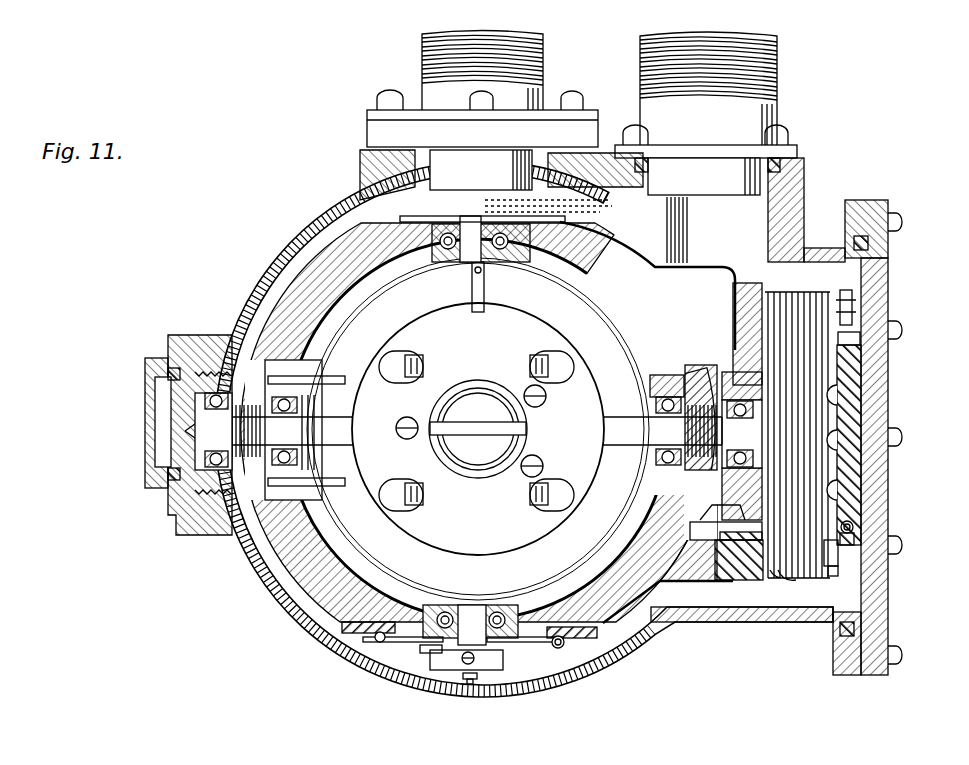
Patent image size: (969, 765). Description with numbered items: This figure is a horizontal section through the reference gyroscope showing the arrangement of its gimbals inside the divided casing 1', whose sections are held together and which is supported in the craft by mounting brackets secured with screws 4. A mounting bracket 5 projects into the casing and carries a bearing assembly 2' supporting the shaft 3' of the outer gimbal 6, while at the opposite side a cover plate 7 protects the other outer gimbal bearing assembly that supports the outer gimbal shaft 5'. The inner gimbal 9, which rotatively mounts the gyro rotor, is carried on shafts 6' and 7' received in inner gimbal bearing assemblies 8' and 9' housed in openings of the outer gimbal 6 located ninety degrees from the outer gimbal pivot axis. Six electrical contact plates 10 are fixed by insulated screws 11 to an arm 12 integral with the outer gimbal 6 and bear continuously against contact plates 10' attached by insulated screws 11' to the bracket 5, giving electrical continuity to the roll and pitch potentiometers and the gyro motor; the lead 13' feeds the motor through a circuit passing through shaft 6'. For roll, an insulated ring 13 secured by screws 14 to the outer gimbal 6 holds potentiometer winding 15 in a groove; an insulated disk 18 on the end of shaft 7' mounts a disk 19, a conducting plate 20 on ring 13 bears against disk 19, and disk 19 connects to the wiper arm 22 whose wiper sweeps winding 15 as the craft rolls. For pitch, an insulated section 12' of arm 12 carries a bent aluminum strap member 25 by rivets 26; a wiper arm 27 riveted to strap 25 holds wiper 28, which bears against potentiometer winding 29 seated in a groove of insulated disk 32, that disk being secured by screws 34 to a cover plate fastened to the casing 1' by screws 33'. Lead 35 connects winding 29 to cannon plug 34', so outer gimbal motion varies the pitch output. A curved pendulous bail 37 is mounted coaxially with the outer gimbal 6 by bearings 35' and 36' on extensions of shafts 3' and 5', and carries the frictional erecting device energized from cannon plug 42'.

The divided casing 1' is at (524, 444).
The bearing assembly 2' is at (705, 393).
The shaft 3' is at (742, 446).
The screws 4 is at (228, 482).
The mounting bracket 5 is at (747, 319).
The outer gimbal shaft 5' is at (419, 431).
The outer gimbal 6 is at (647, 273).
The shaft 6' is at (462, 287).
The cover plate 7 is at (156, 409).
The shaft 7' is at (470, 601).
The inner gimbal bearing assembly 8' is at (479, 211).
The inner gimbal 9 is at (478, 425).
The inner gimbal bearing assembly 9' is at (465, 676).
The electrical contact plates 10 is at (807, 590).
The contact plates 10' is at (797, 420).
The insulated screws 11 is at (877, 582).
The insulated screws 11' is at (837, 294).
The arm 12 is at (668, 564).
The insulated section 12' is at (748, 575).
The insulated ring 13 is at (602, 660).
The lead 13' is at (520, 220).
The screws 14 is at (352, 632).
The potentiometer winding 15 is at (570, 650).
The insulated disk 18 is at (440, 670).
The disk 19 is at (468, 666).
The conducting plate 20 is at (472, 684).
The wiper arm 22 is at (430, 653).
The strap member 25 is at (720, 535).
The rivets 26 is at (728, 512).
The wiper arm 27 is at (828, 545).
The wiper 28 is at (855, 531).
The potentiometer winding 29 is at (852, 525).
The insulated disk 32 is at (840, 355).
The screws 33' is at (928, 438).
The screws 34 is at (880, 445).
The cannon plug 34' is at (730, 113).
The lead 35 is at (897, 466).
The bearing 35' is at (622, 420).
The bearing 36' is at (312, 429).
The curved pendulous bail 37 is at (305, 384).
The cannon plug 42' is at (485, 89).